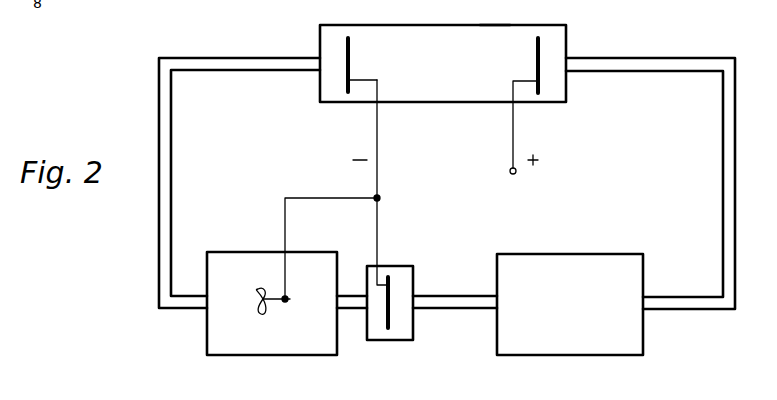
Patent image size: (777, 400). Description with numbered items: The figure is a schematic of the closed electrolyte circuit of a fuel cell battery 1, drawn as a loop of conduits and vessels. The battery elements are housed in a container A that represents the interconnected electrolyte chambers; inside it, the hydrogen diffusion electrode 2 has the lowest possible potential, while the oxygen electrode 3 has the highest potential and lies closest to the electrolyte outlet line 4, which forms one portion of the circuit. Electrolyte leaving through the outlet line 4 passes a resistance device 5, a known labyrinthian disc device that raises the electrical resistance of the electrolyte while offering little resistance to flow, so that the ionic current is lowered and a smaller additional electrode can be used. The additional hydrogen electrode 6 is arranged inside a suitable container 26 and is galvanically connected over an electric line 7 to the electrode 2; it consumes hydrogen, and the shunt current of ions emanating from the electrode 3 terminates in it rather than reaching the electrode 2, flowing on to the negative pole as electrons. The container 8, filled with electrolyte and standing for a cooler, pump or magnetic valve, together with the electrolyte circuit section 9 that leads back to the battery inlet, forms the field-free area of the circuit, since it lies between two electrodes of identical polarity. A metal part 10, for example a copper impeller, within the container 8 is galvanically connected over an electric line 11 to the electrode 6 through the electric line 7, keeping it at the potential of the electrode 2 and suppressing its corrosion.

The fuel cell battery 1 is at (432, 32).
The container A is at (503, 8).
The hydrogen diffusion electrode 2 is at (350, 38).
The oxygen electrode 3 is at (540, 38).
The electrolyte outlet line 4 is at (663, 59).
The resistance device 5 is at (572, 343).
The additional hydrogen electrode 6 is at (388, 330).
The electric line 7 is at (378, 228).
The container 8 is at (275, 340).
The electrolyte circuit section 9 is at (160, 205).
The metal part 10 is at (258, 312).
The electric line 11 is at (318, 183).
The container 26 is at (405, 342).